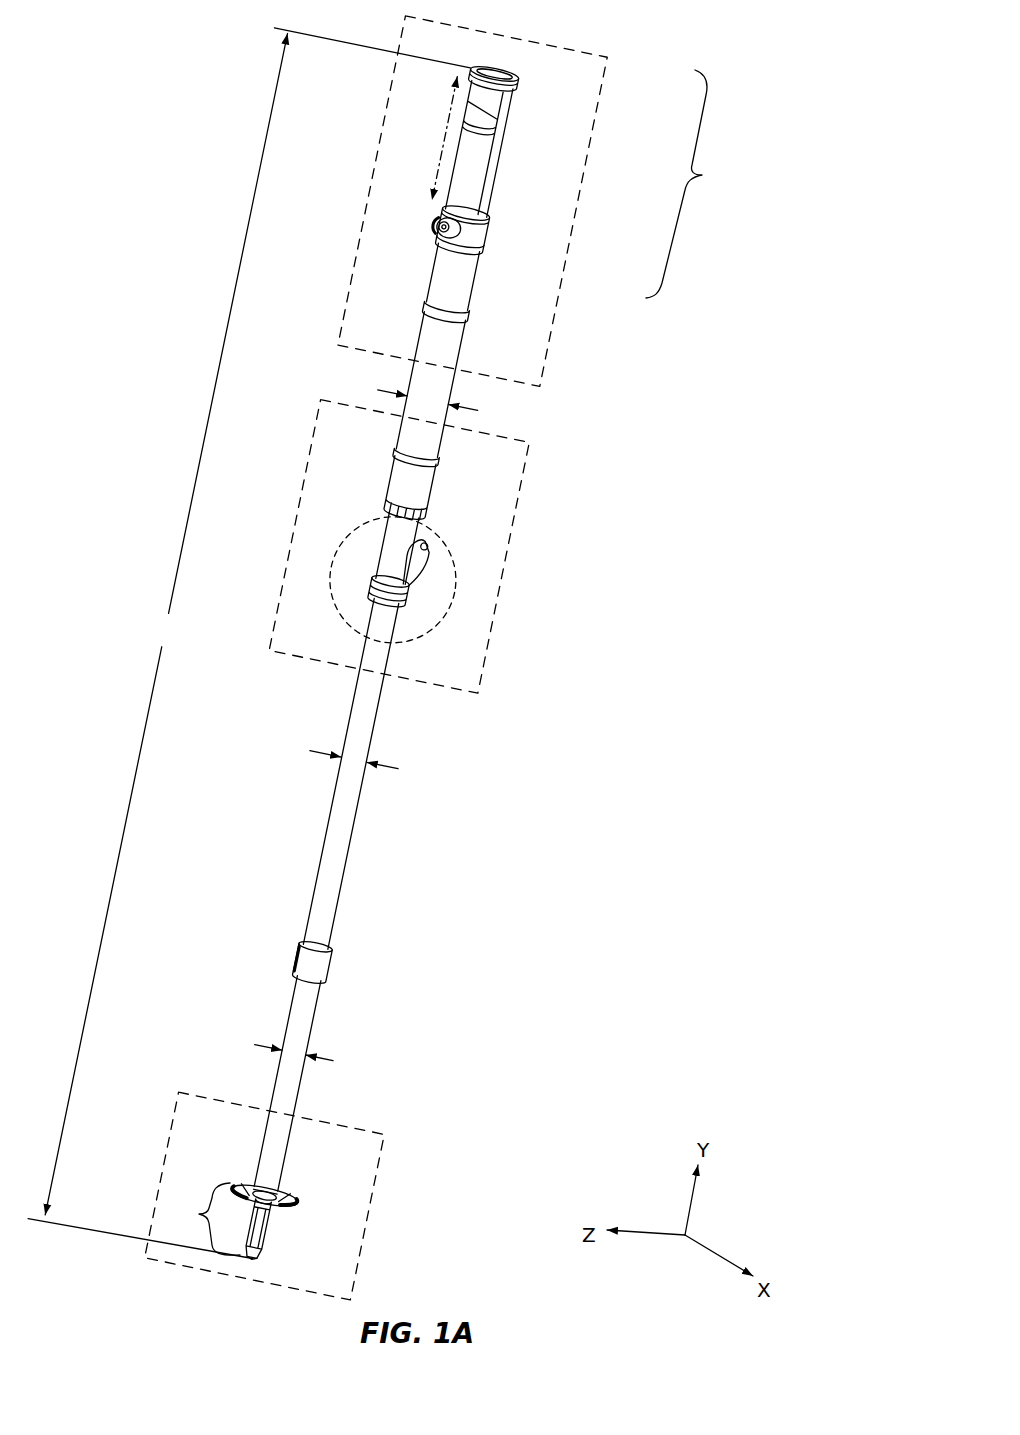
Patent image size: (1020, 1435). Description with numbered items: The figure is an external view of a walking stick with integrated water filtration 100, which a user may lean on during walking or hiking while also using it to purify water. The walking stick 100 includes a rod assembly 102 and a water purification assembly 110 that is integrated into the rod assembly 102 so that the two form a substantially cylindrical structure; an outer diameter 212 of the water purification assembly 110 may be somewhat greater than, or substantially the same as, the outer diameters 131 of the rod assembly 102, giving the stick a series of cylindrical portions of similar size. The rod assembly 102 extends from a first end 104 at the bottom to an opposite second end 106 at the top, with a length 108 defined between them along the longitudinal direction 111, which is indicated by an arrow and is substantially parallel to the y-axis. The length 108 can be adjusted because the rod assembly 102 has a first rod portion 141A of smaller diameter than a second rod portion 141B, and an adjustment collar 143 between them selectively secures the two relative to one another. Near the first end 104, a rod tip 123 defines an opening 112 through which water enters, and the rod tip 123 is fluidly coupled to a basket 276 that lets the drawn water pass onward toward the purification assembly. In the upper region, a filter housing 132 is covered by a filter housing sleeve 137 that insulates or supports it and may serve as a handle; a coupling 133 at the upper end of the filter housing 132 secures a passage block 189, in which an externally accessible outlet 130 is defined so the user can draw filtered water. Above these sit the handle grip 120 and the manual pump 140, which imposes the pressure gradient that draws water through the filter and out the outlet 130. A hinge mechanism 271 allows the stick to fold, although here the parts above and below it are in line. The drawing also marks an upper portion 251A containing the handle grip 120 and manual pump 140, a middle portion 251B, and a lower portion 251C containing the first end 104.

The walking stick with integrated water filtration 100 is at (764, 39).
The rod assembly 102 is at (395, 547).
The first end 104 is at (250, 1260).
The second end 106 is at (506, 66).
The length 108 is at (262, 645).
The water purification assembly 110 is at (479, 342).
The longitudinal direction 111 is at (445, 143).
The opening 112 is at (269, 1223).
The handle grip 120 is at (510, 112).
The rod tip 123 is at (258, 1244).
The outlet 130 is at (441, 230).
The outer diameter of the rod assembly 131 is at (356, 762).
The filter housing 132 is at (424, 468).
The coupling 133 is at (478, 255).
The filter housing sleeve 137 is at (433, 433).
The manual pump 140 is at (693, 184).
The first rod portion 141A is at (286, 1130).
The second rod portion 141B is at (346, 842).
The adjustment collar 143 is at (323, 963).
The passage block 189 is at (481, 234).
The outer diameter of the water purification assembly 212 is at (428, 400).
The upper portion 251A is at (600, 115).
The middle portion 251B is at (522, 470).
The lower portion 251C is at (379, 1160).
The hinge mechanism 271 is at (456, 591).
The basket 276 is at (296, 1198).